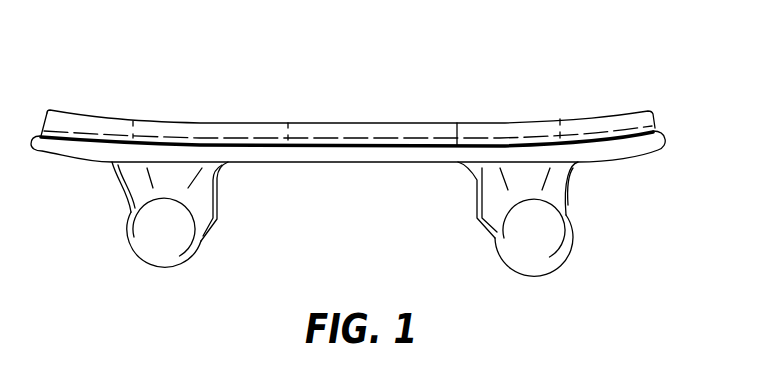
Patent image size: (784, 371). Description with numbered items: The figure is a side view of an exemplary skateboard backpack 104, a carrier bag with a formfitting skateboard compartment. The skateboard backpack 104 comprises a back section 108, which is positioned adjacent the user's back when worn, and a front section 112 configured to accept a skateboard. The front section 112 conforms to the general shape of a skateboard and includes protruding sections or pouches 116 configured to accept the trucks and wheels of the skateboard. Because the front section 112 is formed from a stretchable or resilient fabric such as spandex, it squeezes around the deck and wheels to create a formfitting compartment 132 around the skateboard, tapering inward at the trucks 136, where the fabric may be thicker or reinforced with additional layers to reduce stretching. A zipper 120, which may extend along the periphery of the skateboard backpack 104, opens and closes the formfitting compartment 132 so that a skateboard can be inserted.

The skateboard backpack 104 is at (369, 153).
The back section 108 is at (371, 98).
The zipper 120 is at (104, 137).
The front section 112 is at (619, 162).
The formfitting compartment 132 is at (395, 232).
The trucks 136 is at (233, 185).
The protruding sections or pouches 116 is at (182, 262).